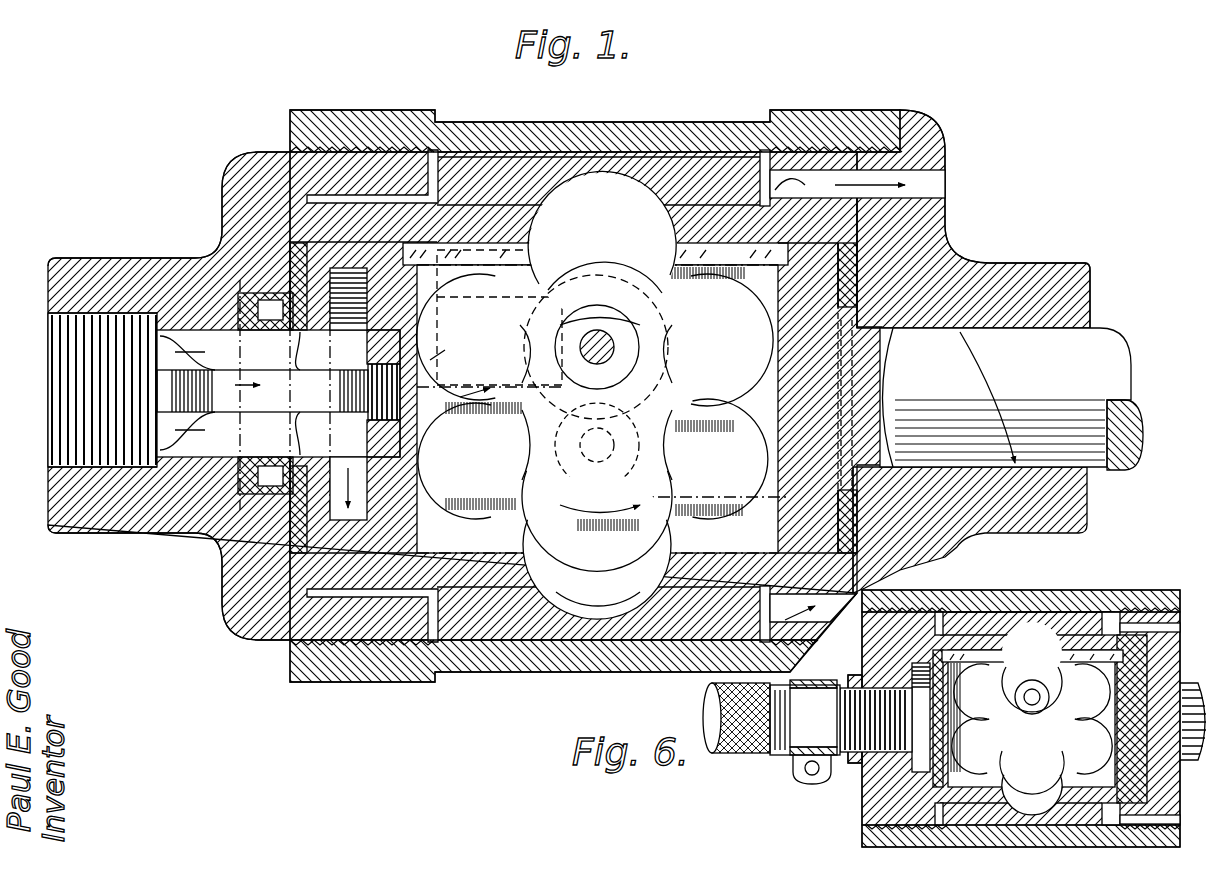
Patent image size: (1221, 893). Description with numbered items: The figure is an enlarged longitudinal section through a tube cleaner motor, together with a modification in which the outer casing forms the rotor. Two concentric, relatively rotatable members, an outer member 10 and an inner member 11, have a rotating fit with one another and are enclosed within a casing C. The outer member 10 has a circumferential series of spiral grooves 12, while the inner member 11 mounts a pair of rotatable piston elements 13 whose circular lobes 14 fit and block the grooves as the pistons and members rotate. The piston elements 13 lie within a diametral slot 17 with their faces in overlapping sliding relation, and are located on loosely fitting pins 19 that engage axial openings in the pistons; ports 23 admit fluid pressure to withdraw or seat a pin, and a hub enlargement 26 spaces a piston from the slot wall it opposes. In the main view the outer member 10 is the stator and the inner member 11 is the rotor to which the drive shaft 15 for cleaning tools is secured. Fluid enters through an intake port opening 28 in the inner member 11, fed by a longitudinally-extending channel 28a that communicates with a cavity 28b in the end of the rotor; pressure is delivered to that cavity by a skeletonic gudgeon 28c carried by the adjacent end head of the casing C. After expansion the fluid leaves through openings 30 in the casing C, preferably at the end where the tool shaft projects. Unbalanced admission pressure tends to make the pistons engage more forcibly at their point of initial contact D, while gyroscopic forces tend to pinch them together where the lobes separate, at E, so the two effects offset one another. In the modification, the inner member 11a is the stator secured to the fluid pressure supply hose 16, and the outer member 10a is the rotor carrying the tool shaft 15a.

In FIG. 1, the outer member 10 is at (680, 178).
In FIG. 6, the outer member 10a is at (1073, 612).
In FIG. 1, the inner member 11 is at (870, 300).
In FIG. 6, the inner member 11a is at (1162, 690).
In FIG. 1, the spiral grooves 12 is at (585, 172).
In FIG. 1, the piston elements 13 is at (602, 240).
In FIG. 6, the piston elements 13 is at (1036, 671).
In FIG. 1, the lobes 14 is at (730, 320).
In FIG. 6, the lobes 14 is at (972, 674).
In FIG. 1, the drive shaft 15 is at (1060, 388).
In FIG. 6, the tool shaft 15a is at (1195, 750).
In FIG. 6, the fluid pressure supply hose 16 is at (765, 756).
In FIG. 1, the diametral slot 17 is at (477, 545).
In FIG. 6, the diametral slot 17 is at (1032, 718).
In FIG. 1, the pins 19 is at (606, 347).
In FIG. 1, the ports 23 is at (710, 490).
In FIG. 1, the hub enlargement 26 is at (618, 376).
In FIG. 1, the intake port opening 28 is at (462, 252).
In FIG. 1, the longitudinally-extending channel 28a is at (540, 350).
In FIG. 1, the cavity 28b is at (272, 300).
In FIG. 6, the cavity 28b is at (920, 755).
In FIG. 1, the skeletonic gudgeon 28c is at (200, 338).
In FIG. 1, the openings 30 is at (945, 186).
In FIG. 6, the openings 30 is at (1170, 627).
In FIG. 1, the casing C is at (856, 122).
In FIG. 6, the casing C is at (995, 598).
In FIG. 1, the point of initial contact D is at (649, 377).
In FIG. 1, the lobe separation area E is at (597, 387).